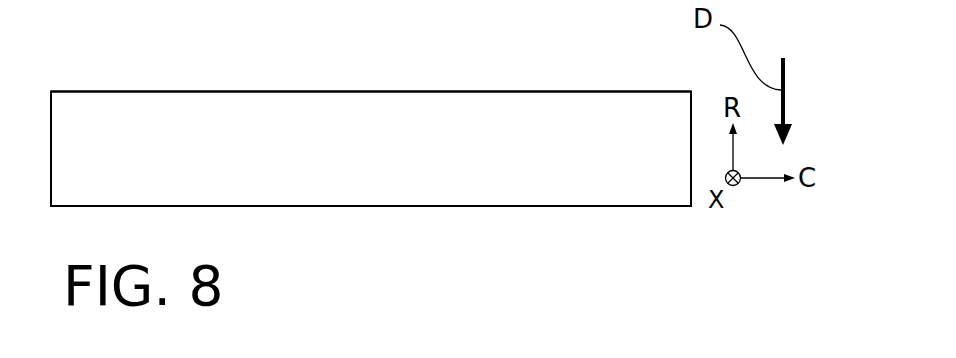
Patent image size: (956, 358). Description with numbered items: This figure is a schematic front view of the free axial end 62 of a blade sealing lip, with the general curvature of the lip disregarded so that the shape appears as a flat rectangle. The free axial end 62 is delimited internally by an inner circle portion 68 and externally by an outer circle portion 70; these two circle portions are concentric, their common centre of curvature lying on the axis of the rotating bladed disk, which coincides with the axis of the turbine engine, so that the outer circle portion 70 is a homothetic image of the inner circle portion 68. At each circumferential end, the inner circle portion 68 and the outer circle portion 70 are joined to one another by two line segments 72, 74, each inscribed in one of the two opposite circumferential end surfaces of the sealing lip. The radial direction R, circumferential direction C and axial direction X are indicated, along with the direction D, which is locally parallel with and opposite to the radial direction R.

The free axial end 62 is at (512, 155).
The outer circle portion 70 is at (330, 91).
The inner circle portion 68 is at (327, 206).
The line segment 74 is at (51, 153).
The line segment 72 is at (691, 148).